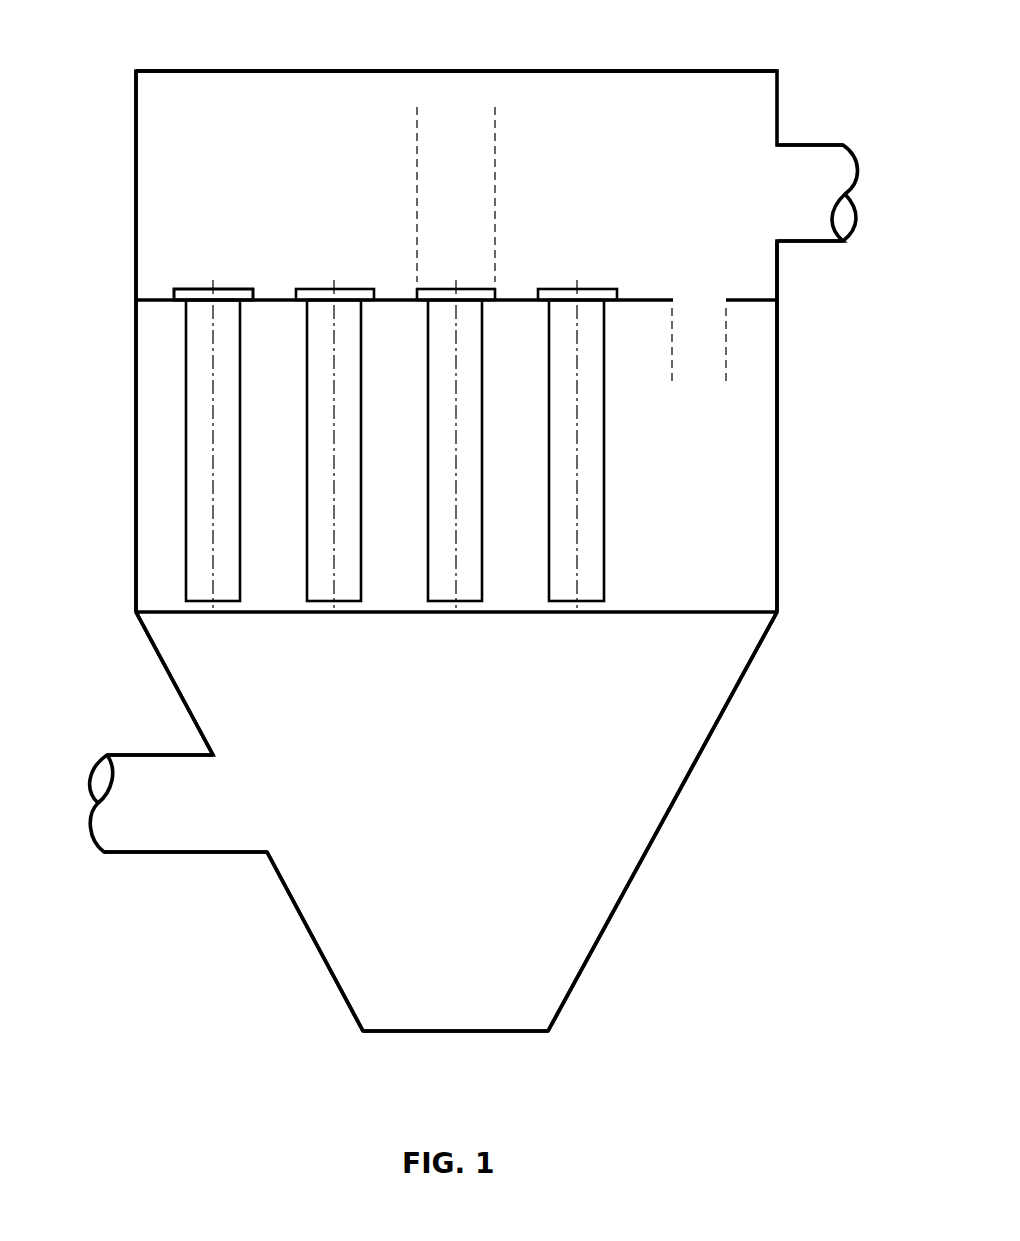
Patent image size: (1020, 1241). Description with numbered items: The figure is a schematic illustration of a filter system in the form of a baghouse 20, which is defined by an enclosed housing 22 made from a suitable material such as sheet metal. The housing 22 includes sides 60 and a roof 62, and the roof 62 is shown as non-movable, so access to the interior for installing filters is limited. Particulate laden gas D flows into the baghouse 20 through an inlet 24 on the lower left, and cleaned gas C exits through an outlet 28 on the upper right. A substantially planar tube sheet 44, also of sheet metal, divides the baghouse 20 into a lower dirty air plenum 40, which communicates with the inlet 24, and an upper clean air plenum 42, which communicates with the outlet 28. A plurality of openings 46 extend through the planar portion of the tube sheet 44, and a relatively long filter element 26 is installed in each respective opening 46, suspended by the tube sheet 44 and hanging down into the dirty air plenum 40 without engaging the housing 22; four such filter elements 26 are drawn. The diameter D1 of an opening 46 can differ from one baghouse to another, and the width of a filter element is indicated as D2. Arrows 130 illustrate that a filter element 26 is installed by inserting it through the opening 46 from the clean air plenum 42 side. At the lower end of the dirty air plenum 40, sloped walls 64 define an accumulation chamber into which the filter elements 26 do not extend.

The baghouse 20 is at (679, 880).
The housing 22 is at (778, 557).
The inlet 24 is at (155, 853).
The filter elements 26 is at (197, 273).
The outlet 28 is at (820, 144).
The dirty air plenum 40 is at (459, 707).
The clean air plenum 42 is at (363, 127).
The tube sheet 44 is at (746, 299).
The openings 46 is at (700, 274).
The sides 60 is at (778, 470).
The roof 62 is at (728, 70).
The sloped walls 64 is at (293, 893).
The arrows 130 is at (229, 280).
The particulate laden gas D is at (142, 803).
The cleaned gas C is at (813, 194).
The diameter of opening D1 is at (777, 358).
The filter width D2 is at (493, 132).